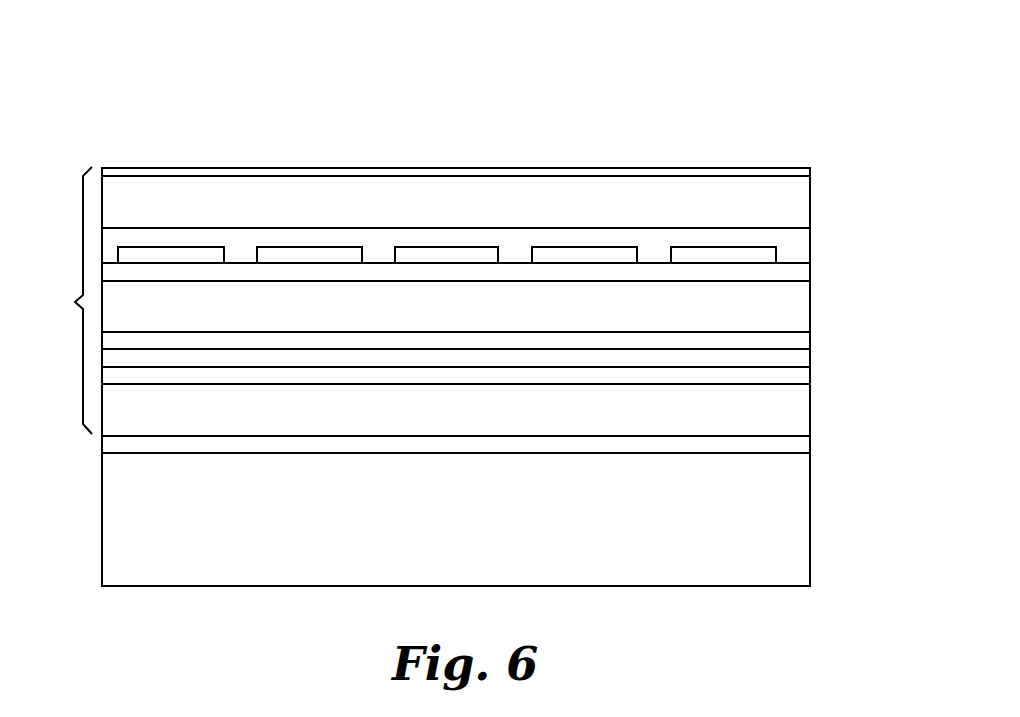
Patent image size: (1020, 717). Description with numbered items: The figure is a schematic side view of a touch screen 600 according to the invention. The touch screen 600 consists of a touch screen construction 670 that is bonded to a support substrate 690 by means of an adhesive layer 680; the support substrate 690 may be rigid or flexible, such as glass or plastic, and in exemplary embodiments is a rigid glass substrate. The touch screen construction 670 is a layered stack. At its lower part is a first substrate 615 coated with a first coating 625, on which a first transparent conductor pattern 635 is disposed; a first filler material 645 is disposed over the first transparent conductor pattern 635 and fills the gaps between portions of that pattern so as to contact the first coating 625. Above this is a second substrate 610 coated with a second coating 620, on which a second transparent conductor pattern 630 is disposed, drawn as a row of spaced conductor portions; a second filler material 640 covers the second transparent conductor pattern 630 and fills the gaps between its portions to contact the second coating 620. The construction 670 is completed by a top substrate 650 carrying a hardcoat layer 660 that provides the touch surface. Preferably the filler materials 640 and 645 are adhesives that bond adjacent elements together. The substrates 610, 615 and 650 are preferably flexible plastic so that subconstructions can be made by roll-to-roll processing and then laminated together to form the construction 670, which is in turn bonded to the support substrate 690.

The touch screen 600 is at (722, 66).
The hardcoat layer 660 is at (463, 170).
The top substrate 650 is at (568, 187).
The second filler material 640 is at (800, 240).
The second transparent conductor pattern 630 is at (676, 250).
The second coating 620 is at (800, 271).
The second substrate 610 is at (800, 305).
The first filler material 645 is at (800, 340).
The first transparent conductor pattern 635 is at (800, 357).
The first coating 625 is at (800, 376).
The first substrate 615 is at (798, 413).
The adhesive layer 680 is at (800, 446).
The support substrate 690 is at (802, 548).
The touch screen construction 670 is at (56, 300).